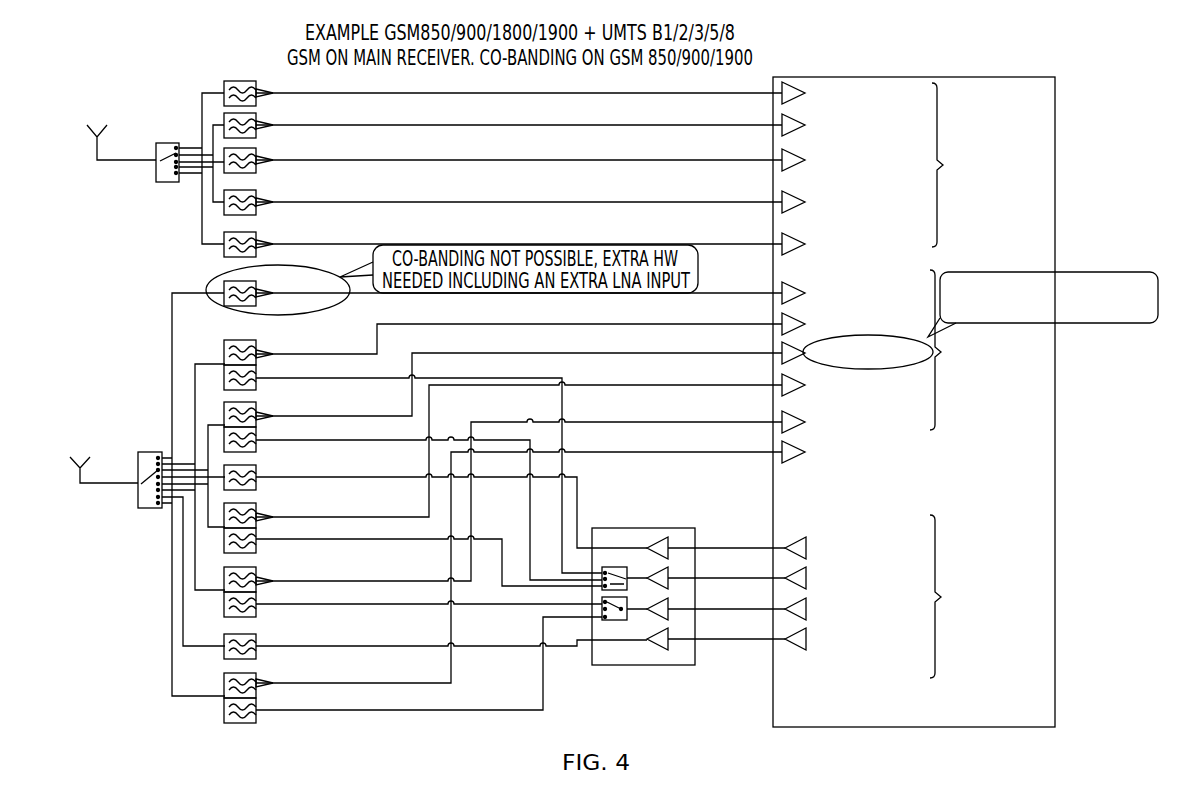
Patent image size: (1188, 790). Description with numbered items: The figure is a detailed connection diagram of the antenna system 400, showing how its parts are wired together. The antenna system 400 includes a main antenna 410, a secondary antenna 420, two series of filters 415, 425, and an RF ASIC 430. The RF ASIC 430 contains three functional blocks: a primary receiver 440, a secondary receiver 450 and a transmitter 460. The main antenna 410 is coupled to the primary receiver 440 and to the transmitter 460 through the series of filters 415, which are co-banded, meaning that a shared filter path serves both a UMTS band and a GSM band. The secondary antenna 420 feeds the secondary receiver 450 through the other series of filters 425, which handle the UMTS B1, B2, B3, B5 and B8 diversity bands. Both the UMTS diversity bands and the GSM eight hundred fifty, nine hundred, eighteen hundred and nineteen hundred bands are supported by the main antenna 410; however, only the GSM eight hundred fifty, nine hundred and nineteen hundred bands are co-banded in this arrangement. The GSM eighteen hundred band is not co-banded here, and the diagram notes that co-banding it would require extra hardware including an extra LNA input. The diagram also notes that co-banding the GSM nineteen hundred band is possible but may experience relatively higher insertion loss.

The antenna system 400 is at (625, 715).
The main antenna 410 is at (94, 460).
The series of filters 415 is at (223, 276).
The secondary antenna 420 is at (111, 120).
The series of filters 425 is at (238, 77).
The RF ASIC 430 is at (914, 751).
The primary receiver 440 is at (1002, 402).
The secondary receiver 450 is at (1004, 205).
The transmitter 460 is at (1016, 635).